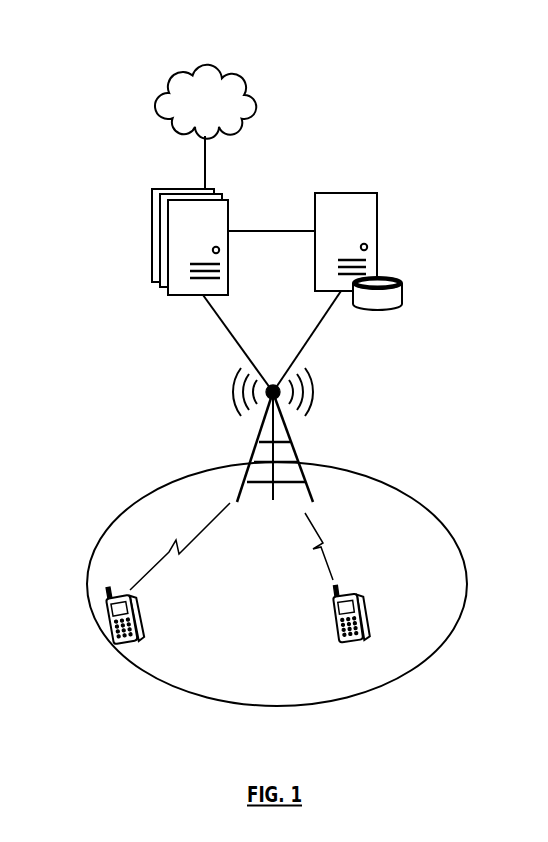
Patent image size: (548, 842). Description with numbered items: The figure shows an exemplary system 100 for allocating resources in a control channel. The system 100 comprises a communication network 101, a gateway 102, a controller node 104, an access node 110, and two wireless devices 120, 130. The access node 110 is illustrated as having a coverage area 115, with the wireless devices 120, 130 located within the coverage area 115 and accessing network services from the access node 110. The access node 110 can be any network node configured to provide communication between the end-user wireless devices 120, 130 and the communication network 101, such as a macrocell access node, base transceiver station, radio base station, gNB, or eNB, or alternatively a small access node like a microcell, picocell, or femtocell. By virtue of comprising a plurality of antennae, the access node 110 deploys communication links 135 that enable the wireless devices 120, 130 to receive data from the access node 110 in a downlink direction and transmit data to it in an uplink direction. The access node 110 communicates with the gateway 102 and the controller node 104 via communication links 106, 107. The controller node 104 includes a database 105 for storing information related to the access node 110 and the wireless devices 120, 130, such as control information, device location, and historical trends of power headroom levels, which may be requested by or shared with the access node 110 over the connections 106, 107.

The system 100 is at (381, 43).
The communication network 101 is at (222, 114).
The gateway 102 is at (172, 188).
The controller node 104 is at (375, 193).
The database 105 is at (400, 277).
The communication link 106 is at (313, 332).
The communication link 107 is at (215, 312).
The access node 110 is at (254, 455).
The coverage area 115 is at (423, 660).
The wireless device 120 is at (104, 602).
The wireless device 130 is at (360, 598).
The communication link 135 is at (172, 545).